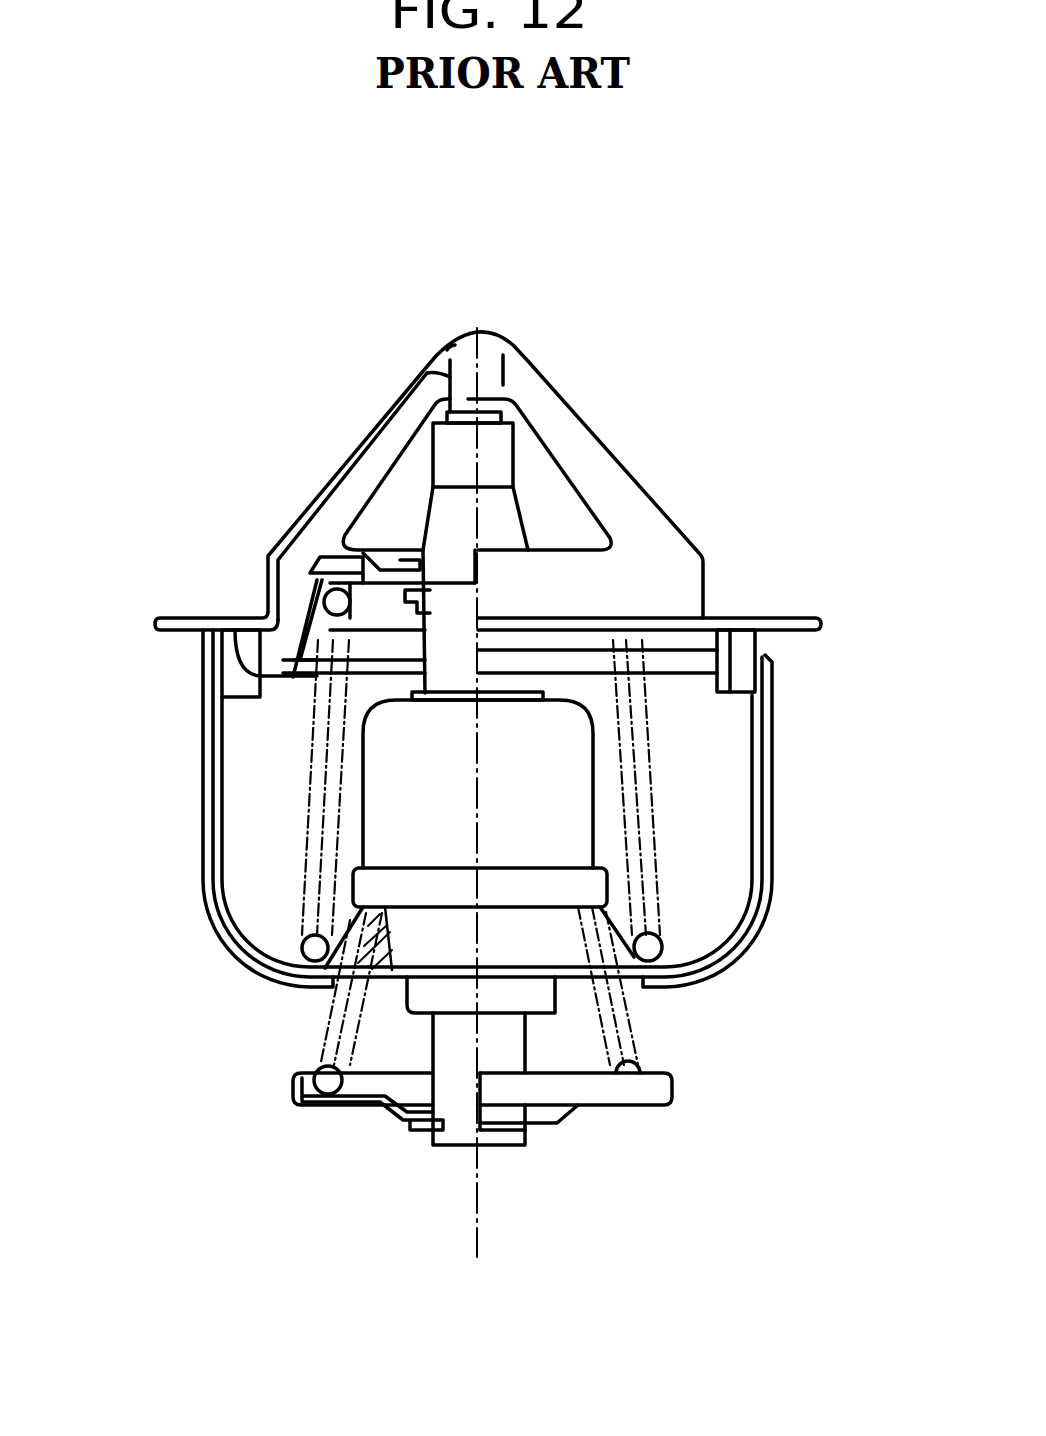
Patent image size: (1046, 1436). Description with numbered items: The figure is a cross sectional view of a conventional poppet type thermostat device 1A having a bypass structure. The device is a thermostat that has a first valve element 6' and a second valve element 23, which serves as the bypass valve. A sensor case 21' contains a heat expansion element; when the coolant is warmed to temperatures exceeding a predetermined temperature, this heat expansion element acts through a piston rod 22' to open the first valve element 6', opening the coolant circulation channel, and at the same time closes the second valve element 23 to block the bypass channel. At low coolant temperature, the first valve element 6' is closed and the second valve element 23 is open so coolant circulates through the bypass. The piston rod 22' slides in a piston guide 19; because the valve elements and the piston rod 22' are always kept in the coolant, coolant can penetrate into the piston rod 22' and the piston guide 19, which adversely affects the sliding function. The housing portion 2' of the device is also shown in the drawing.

The thermostat device 1A is at (736, 328).
The piston rod 22' is at (385, 346).
The piston guide 19 is at (432, 470).
The first valve element 6' is at (265, 571).
The housing 2' is at (413, 815).
The sensor case 21' is at (347, 835).
The second valve element 23 is at (393, 1113).